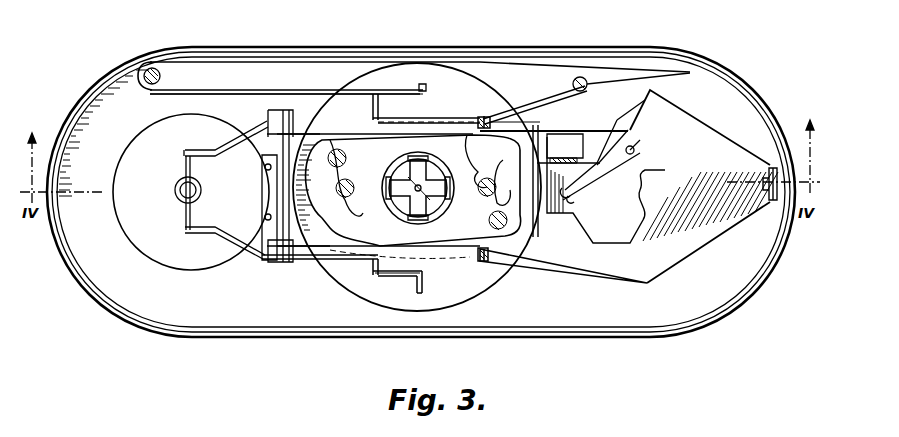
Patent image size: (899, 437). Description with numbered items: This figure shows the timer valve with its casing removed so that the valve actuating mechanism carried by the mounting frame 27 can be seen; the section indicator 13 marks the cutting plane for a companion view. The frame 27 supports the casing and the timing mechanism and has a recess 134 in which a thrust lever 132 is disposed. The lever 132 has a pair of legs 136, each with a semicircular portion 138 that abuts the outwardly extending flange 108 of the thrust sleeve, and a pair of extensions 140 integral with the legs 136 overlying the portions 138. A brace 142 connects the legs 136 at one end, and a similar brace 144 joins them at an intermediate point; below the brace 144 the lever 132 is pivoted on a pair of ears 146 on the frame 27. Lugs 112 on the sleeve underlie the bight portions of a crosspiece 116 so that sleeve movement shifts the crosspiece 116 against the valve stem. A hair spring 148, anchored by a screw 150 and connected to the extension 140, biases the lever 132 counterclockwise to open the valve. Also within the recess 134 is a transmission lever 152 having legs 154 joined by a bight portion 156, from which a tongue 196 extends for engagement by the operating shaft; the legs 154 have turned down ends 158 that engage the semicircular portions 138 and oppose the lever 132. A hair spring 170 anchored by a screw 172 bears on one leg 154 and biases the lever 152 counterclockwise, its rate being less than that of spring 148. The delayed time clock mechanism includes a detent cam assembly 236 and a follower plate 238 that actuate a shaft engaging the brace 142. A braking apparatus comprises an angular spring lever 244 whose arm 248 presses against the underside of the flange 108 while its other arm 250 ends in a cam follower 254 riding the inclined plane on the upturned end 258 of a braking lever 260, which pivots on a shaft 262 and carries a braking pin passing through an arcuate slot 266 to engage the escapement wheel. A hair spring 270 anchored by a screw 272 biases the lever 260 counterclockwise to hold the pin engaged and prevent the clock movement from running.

The frame rail 13 is at (320, 268).
The mounting frame 27 is at (237, 52).
The outwardly extending flange 108 is at (423, 256).
The lugs 112 is at (392, 172).
The crosspiece 116 is at (410, 152).
The thrust lever 132 is at (306, 117).
The recess 134 is at (230, 65).
The legs 136 is at (245, 135).
The semicircular portion 138 is at (479, 112).
The extensions 140 is at (417, 100).
The brace 142 is at (186, 157).
The brace 144 is at (264, 196).
The ears 146 is at (299, 111).
The hair spring 148 is at (227, 93).
The screw 150 is at (166, 64).
The transmission lever 152 is at (679, 118).
The legs 154 is at (560, 93).
The bight portion 156 is at (725, 155).
The turned down ends 158 is at (485, 117).
The hair spring 170 is at (594, 79).
The screw 172 is at (585, 71).
The tongue 196 is at (698, 205).
The detent cam assembly 236 is at (199, 184).
The follower plate 238 is at (181, 189).
The lever 244 is at (565, 148).
The arm 248 is at (517, 123).
The arm 250 is at (554, 121).
The cam follower 254 is at (613, 138).
The upturned end 258 is at (637, 108).
The braking lever 260 is at (589, 167).
The shaft 262 is at (632, 162).
The arcuate slot 266 is at (588, 184).
The hair spring 270 is at (651, 138).
The screw 272 is at (655, 128).